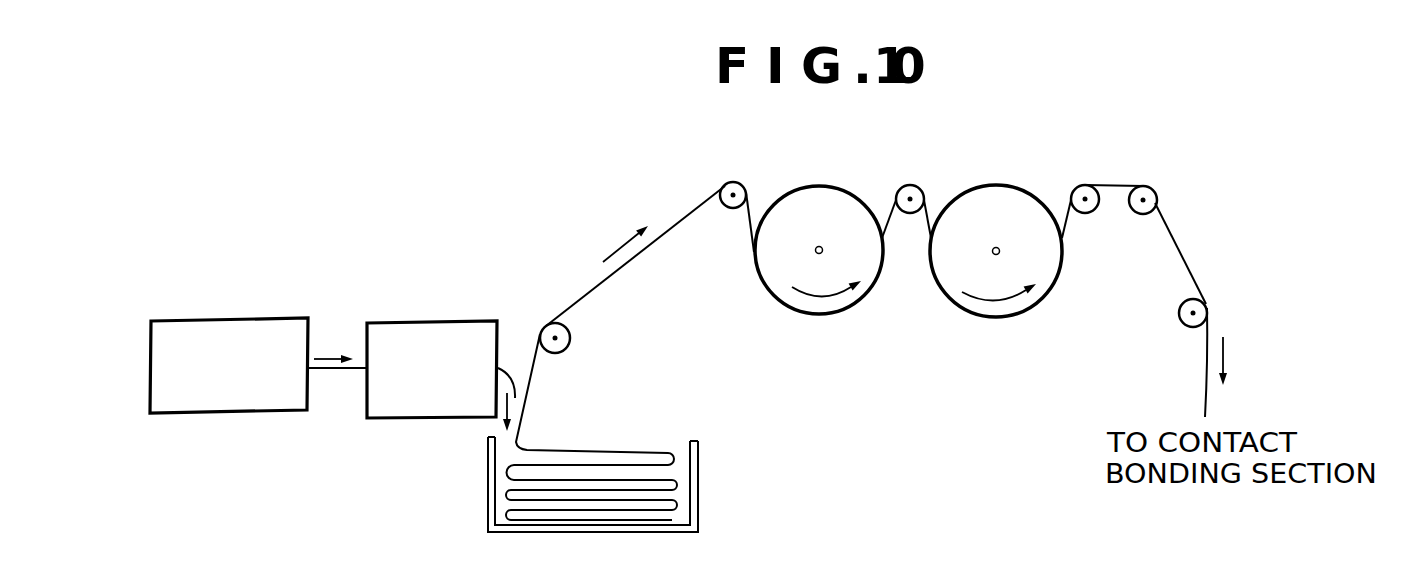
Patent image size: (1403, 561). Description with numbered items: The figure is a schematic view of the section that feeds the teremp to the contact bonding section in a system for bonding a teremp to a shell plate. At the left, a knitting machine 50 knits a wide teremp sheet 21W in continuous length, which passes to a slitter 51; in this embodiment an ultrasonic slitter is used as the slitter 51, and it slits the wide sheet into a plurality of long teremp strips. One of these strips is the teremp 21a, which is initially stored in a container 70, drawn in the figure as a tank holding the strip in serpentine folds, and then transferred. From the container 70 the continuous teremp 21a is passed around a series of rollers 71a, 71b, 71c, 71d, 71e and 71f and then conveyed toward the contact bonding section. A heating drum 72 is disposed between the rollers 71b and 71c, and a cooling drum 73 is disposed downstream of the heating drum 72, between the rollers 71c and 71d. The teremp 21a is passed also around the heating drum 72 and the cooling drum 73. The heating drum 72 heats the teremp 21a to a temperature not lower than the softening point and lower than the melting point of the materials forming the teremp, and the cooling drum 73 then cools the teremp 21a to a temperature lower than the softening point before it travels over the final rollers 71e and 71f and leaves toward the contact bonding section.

The knitting machine 50 is at (283, 320).
The slitter 51 is at (452, 323).
The wide teremp sheet 21W is at (335, 369).
The teremp 21a is at (623, 263).
The container 70 is at (702, 472).
The roller 71a is at (568, 350).
The roller 71b is at (746, 184).
The roller 71c is at (910, 185).
The roller 71d is at (1087, 185).
The roller 71e is at (1155, 188).
The roller 71f is at (1207, 305).
The heating drum 72 is at (838, 315).
The cooling drum 73 is at (1007, 317).